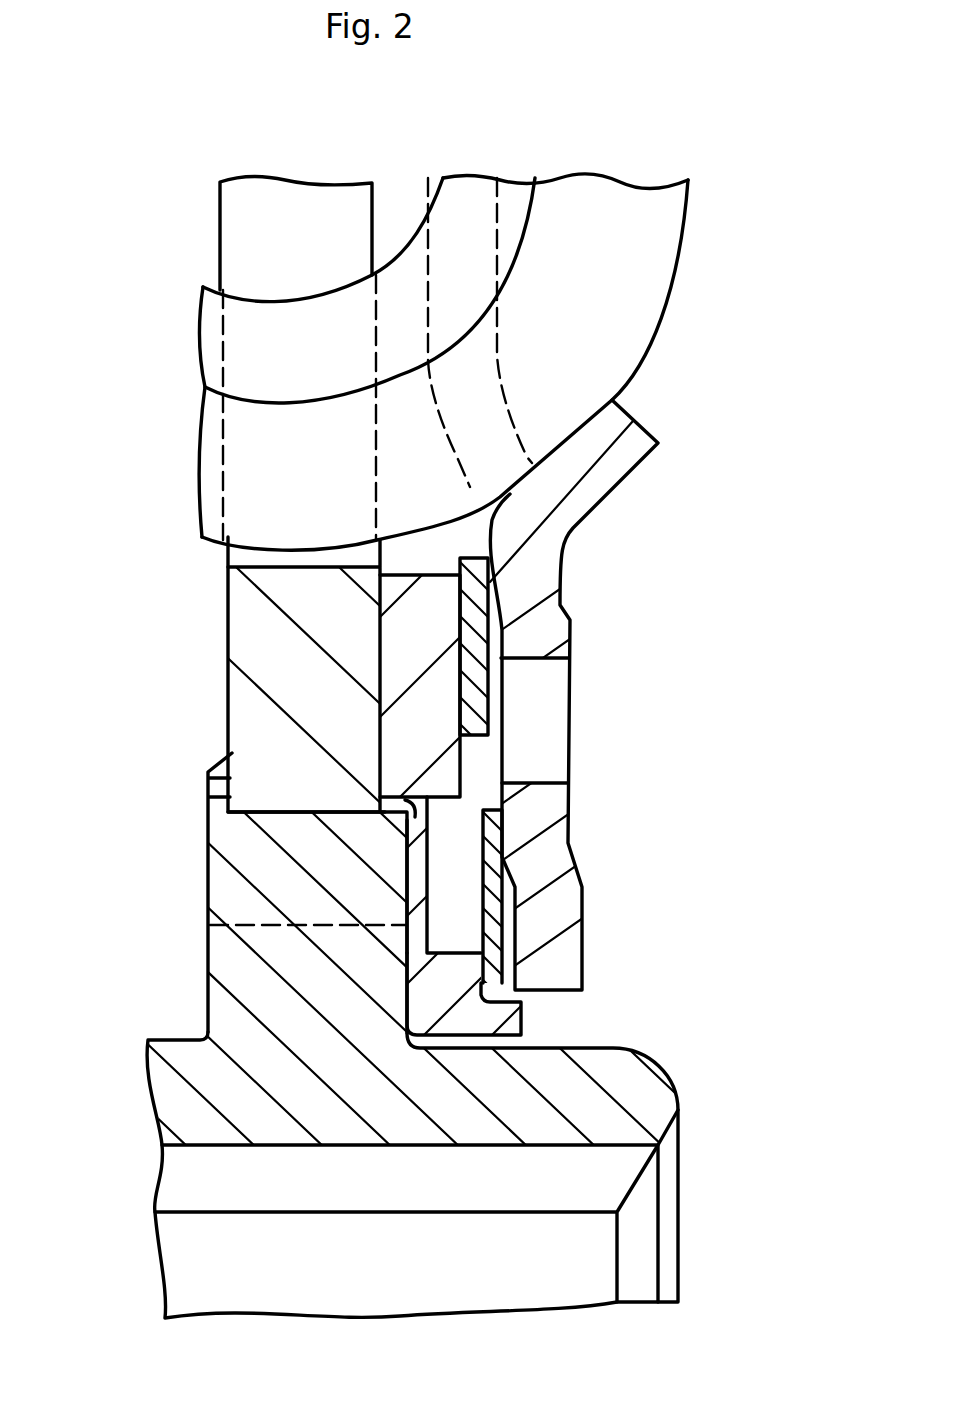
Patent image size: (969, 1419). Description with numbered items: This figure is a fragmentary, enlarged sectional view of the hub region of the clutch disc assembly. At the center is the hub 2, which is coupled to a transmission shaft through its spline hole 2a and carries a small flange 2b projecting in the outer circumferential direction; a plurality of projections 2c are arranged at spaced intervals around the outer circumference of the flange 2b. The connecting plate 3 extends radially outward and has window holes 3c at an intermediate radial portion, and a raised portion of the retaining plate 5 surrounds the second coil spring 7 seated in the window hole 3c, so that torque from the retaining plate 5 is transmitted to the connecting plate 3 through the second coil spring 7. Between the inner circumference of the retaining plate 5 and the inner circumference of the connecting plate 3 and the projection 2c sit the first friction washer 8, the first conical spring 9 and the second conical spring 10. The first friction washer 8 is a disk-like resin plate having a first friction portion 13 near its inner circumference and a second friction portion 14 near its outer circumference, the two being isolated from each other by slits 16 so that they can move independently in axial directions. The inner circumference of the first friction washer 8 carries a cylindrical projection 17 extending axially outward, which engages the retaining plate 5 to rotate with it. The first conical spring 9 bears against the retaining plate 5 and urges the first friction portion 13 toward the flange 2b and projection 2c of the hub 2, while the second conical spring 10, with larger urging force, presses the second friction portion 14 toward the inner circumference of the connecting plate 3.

The hub 2 is at (533, 1112).
The spline hole 2a is at (405, 1180).
The flange 2b is at (298, 975).
The projection 2c is at (288, 873).
The connecting plate 3 is at (292, 635).
The window hole 3c is at (227, 550).
The retaining plate 5 is at (503, 630).
The second coil spring 7 is at (627, 287).
The first friction washer 8 is at (478, 763).
The first conical spring 9 is at (575, 858).
The second conical spring 10 is at (480, 687).
The first friction portion 13 is at (413, 933).
The second friction portion 14 is at (415, 652).
The slit 16 is at (393, 820).
The cylindrical projection 17 is at (452, 1018).